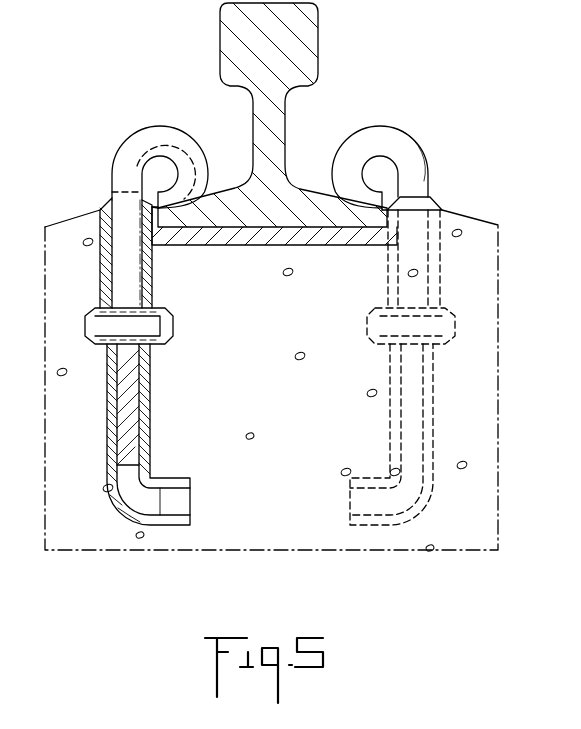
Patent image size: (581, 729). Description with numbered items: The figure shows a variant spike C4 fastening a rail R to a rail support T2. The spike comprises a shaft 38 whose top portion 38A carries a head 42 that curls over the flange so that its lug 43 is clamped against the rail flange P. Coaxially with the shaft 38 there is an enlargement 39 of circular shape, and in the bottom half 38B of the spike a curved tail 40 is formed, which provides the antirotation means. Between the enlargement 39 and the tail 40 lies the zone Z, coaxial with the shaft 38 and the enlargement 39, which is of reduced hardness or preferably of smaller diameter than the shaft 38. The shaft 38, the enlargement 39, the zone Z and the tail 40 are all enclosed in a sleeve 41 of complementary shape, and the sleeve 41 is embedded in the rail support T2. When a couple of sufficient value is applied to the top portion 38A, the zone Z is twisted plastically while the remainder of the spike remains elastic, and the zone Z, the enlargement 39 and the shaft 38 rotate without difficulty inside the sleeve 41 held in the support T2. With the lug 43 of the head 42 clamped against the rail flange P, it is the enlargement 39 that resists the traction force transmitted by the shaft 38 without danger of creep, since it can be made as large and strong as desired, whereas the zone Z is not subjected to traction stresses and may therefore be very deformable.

The shaft 38 is at (118, 185).
The top portion of the spike 38A is at (148, 132).
The bottom half of the spike 38B is at (138, 468).
The enlargement 39 is at (150, 327).
The curved tail 40 is at (167, 500).
The sleeve 41 is at (103, 287).
The head 42 is at (205, 176).
The lug 43 is at (176, 210).
The spike C4 is at (142, 286).
The rail flange P is at (224, 210).
The rail R is at (278, 128).
The rail support T2 is at (60, 238).
The zone Z is at (130, 417).